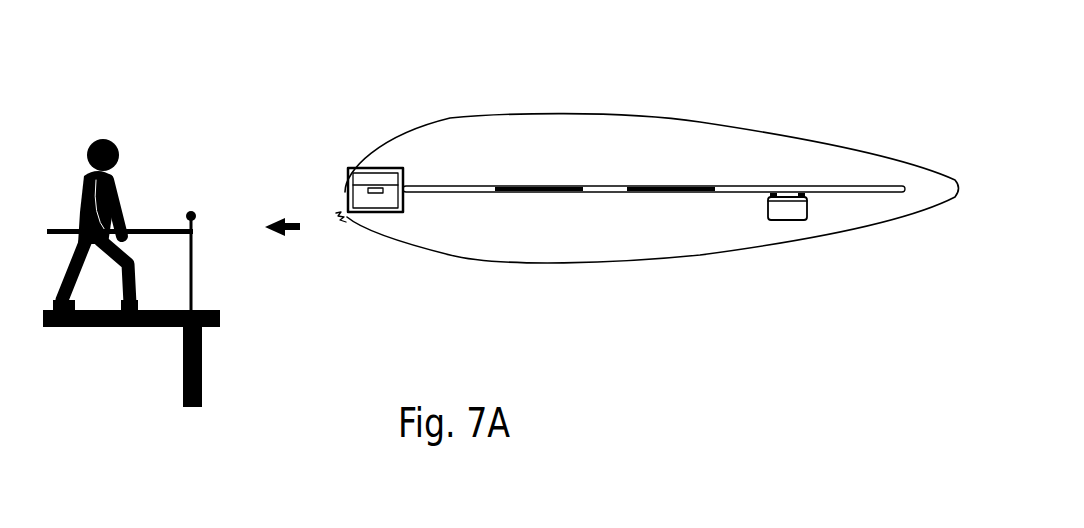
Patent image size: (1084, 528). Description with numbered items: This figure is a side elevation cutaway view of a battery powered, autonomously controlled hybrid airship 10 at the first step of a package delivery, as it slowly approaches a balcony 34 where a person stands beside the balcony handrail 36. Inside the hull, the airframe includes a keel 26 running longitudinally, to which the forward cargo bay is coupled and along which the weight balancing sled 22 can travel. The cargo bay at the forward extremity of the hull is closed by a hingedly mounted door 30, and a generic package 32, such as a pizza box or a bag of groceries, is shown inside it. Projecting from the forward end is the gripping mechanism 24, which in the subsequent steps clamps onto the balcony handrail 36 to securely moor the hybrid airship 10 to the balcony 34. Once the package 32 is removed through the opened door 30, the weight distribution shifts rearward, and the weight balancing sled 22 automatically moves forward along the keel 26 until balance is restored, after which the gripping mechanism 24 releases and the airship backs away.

The hybrid airship 10 is at (620, 104).
The weight balancing sled 22 is at (790, 202).
The gripping mechanism 24 is at (338, 222).
The keel 26 is at (843, 197).
The door 30 is at (331, 157).
The package 32 is at (373, 178).
The balcony 34 is at (212, 352).
The balcony handrail 36 is at (195, 203).